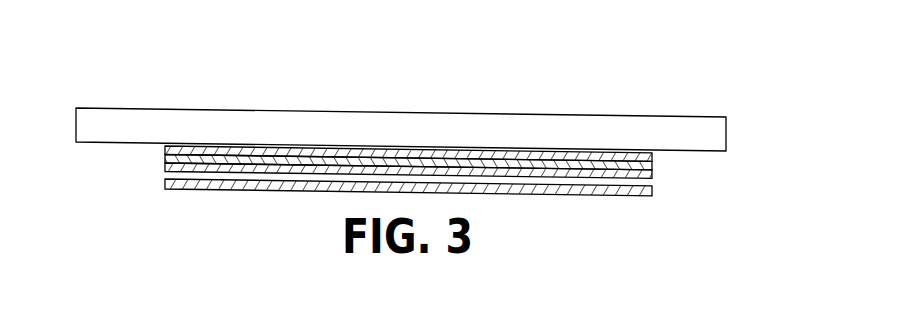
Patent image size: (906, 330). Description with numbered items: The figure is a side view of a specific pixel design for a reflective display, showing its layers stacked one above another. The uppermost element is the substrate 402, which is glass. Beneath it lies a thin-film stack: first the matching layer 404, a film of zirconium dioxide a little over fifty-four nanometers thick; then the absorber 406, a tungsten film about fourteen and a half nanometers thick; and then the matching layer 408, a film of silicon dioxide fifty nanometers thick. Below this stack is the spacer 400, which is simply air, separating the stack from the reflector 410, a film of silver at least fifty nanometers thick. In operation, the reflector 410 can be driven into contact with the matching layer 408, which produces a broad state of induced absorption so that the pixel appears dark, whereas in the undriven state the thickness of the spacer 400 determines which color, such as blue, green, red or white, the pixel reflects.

The spacer 400 is at (162, 175).
The substrate 402 is at (700, 131).
The matching layer 404 is at (652, 157).
The absorber 406 is at (652, 162).
The matching layer 408 is at (652, 170).
The reflector 410 is at (620, 195).